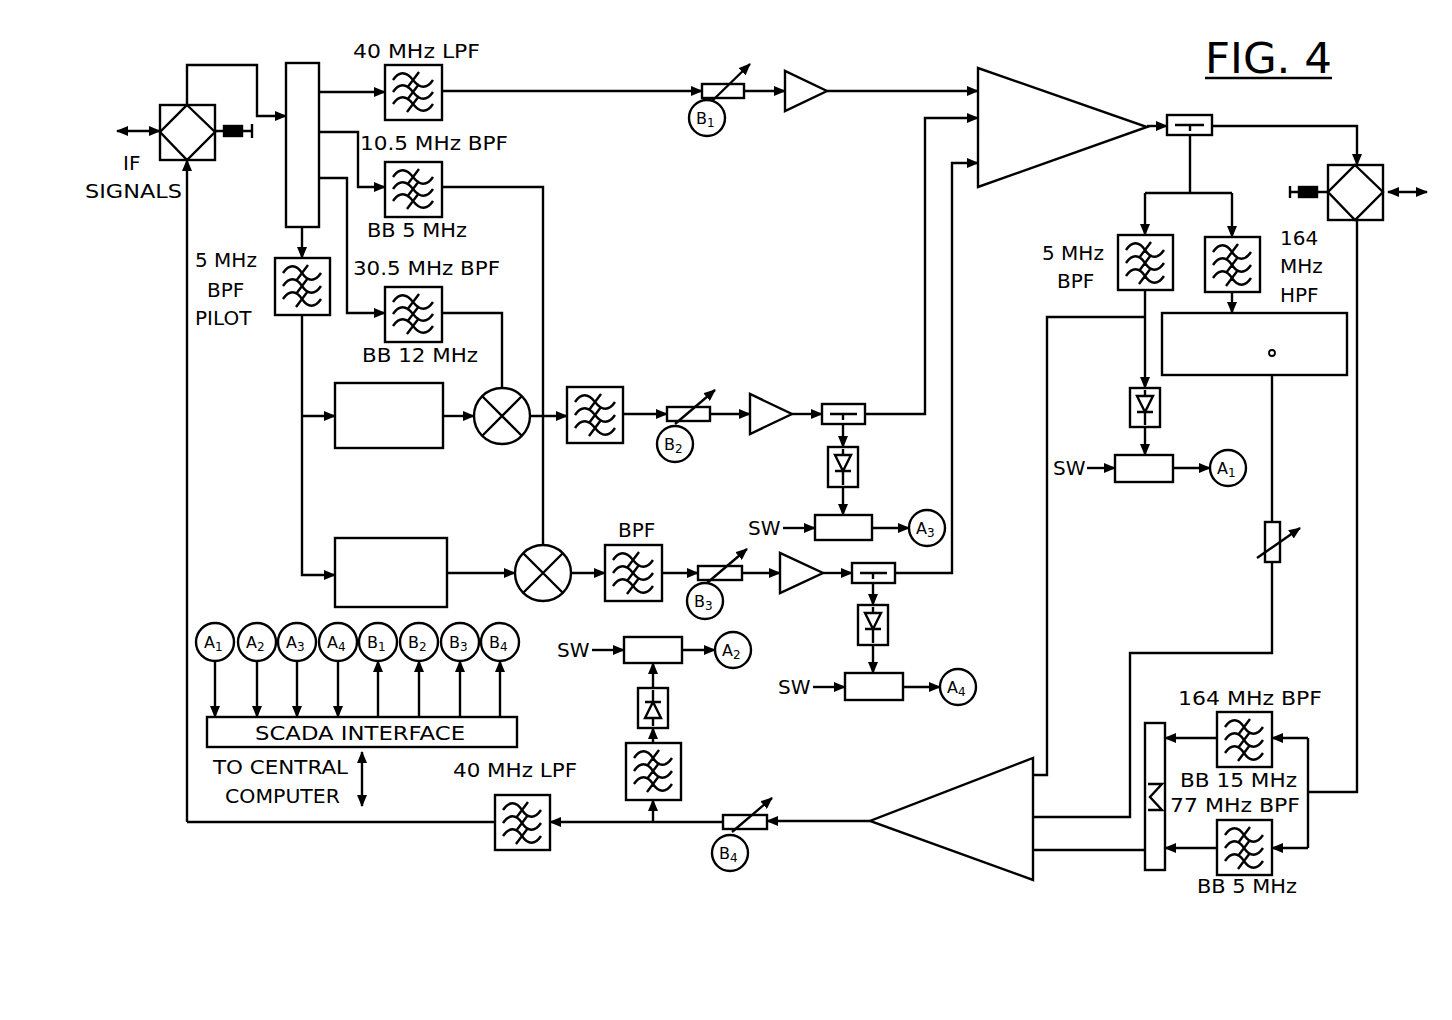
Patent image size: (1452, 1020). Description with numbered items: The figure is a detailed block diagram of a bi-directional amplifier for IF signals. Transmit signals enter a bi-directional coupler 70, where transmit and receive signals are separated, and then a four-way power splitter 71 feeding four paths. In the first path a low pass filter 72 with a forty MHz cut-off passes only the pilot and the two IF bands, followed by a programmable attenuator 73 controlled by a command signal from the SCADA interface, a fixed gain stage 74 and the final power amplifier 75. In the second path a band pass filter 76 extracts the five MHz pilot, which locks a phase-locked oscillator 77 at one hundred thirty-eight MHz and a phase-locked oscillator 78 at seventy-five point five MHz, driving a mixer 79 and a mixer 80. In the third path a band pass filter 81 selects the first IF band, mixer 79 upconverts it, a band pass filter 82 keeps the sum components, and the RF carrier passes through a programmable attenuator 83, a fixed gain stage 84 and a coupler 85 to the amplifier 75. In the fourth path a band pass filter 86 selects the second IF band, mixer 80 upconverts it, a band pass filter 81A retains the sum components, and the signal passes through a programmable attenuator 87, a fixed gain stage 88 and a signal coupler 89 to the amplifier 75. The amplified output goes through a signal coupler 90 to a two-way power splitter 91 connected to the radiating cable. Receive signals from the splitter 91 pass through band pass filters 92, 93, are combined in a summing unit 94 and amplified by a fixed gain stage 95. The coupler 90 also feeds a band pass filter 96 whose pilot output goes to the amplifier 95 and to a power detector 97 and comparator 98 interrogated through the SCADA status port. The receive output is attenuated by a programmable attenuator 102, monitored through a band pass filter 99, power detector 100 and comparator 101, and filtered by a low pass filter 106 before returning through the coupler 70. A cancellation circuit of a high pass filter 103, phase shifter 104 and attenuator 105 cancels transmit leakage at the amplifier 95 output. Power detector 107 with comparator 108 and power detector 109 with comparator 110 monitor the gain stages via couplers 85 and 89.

The bi-directional coupler 70 is at (218, 148).
The four-way power splitter 71 is at (285, 203).
The low pass filter 72 is at (443, 103).
The programmable attenuator 73 is at (737, 99).
The fixed gain stage 74 is at (808, 101).
The final power amplifier 75 is at (1075, 100).
The band pass filter 76 is at (282, 318).
The phase-locked oscillator 77 is at (345, 452).
The phase-locked oscillator 78 is at (432, 538).
The mixer 79 is at (508, 387).
The mixer 80 is at (532, 548).
The band pass filter 81 is at (443, 297).
The band pass filter 81A is at (607, 543).
The band pass filter 82 is at (597, 385).
The programmable attenuator 83 is at (672, 404).
The fixed gain stage 84 is at (762, 394).
The coupler 85 is at (845, 403).
The band pass filter 86 is at (443, 175).
The programmable attenuator 87 is at (712, 565).
The fixed gain stage 88 is at (798, 580).
The signal coupler 89 is at (895, 575).
The signal coupler 90 is at (1173, 136).
The two-way power splitter 91 is at (1328, 172).
The band pass filter 92 is at (1273, 725).
The band pass filter 93 is at (1273, 857).
The summing unit 94 is at (1153, 722).
The fixed gain stage 95 is at (962, 785).
The band pass filter 96 is at (1128, 233).
The power detector 97 is at (1130, 402).
The comparator 98 is at (1140, 483).
The band pass filter 99 is at (625, 750).
The power detector 100 is at (637, 708).
The fixed threshold comparator 101 is at (655, 637).
The programmable attenuator 102 is at (735, 813).
The high pass filter 103 is at (1212, 237).
The phase shifter 104 is at (1288, 377).
The attenuator 105 is at (1282, 553).
The low pass filter 106 is at (495, 808).
The power detector 107 is at (860, 466).
The fixed threshold comparator 108 is at (817, 513).
The power detector 109 is at (890, 623).
The fixed threshold comparator 110 is at (863, 702).